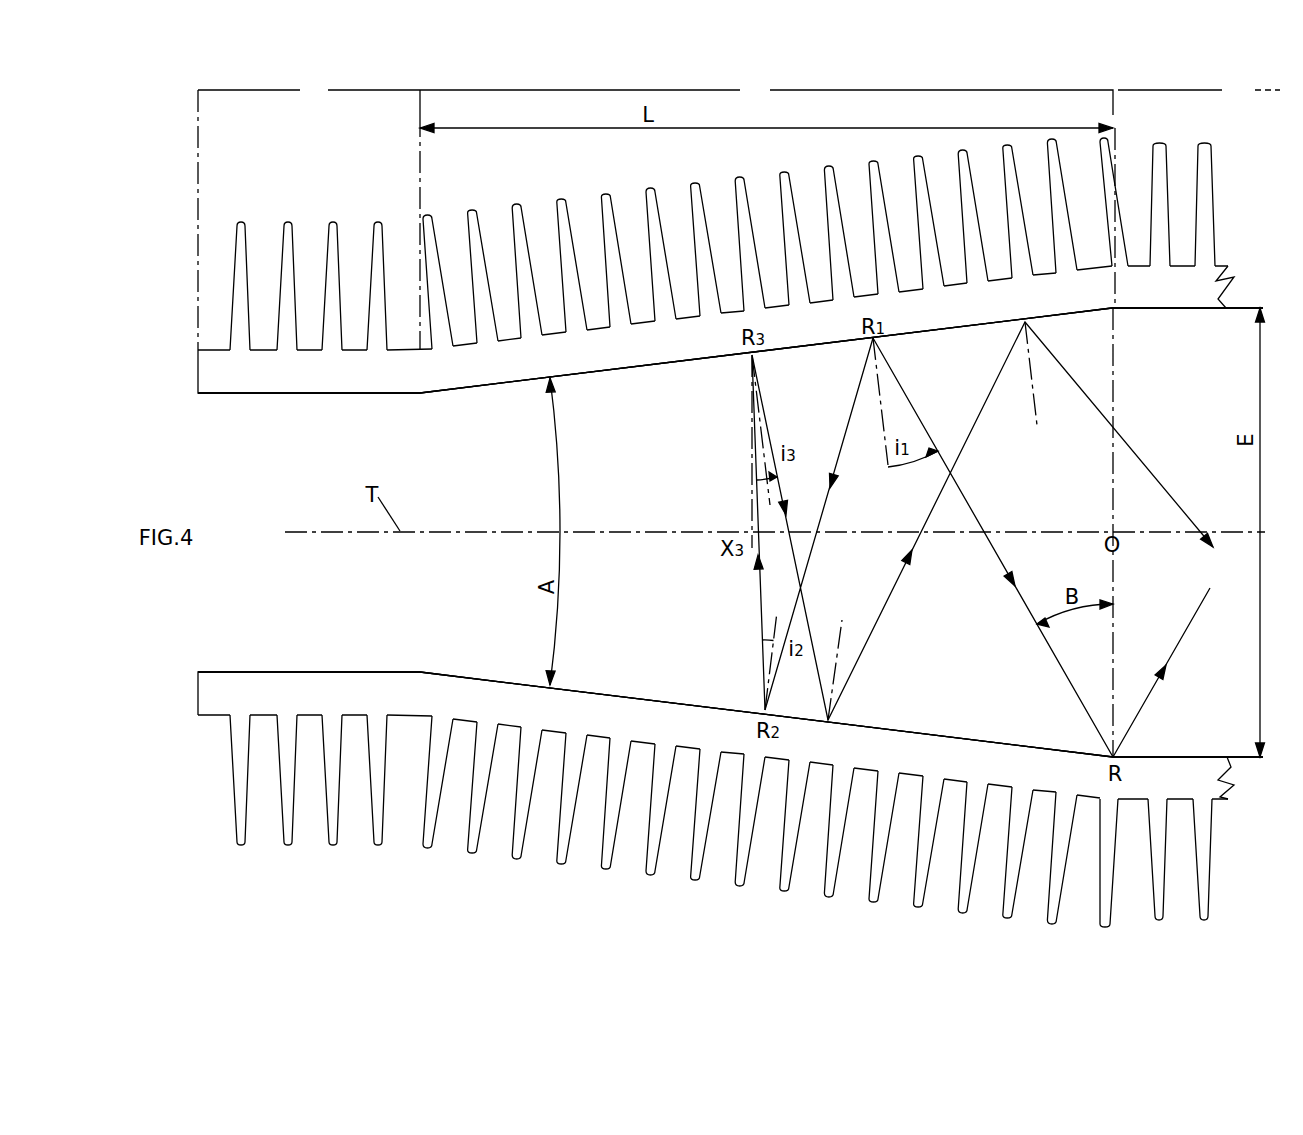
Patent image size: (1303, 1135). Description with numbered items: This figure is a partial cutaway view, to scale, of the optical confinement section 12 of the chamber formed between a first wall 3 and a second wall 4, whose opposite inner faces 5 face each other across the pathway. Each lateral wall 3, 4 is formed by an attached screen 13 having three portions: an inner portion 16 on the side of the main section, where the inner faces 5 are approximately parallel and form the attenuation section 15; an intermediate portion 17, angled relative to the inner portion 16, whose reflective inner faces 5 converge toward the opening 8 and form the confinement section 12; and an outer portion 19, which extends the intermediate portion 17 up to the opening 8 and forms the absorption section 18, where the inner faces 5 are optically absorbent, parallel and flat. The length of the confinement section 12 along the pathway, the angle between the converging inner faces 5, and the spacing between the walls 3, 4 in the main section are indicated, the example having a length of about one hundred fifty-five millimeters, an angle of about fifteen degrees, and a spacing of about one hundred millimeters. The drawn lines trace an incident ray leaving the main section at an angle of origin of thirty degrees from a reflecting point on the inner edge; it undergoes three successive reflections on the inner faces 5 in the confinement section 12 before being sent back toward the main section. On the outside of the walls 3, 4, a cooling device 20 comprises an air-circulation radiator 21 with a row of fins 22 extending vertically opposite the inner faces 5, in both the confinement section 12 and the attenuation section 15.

The first wall 3 is at (1218, 279).
The second wall 4 is at (1205, 781).
The inner faces 5 is at (303, 395).
The opening 8 is at (195, 604).
The optical confinement section 12 is at (767, 193).
The attached screen 13 is at (741, 516).
The attenuation section 15 is at (1199, 91).
The inner portion 16 is at (1197, 302).
The intermediate portion 17 is at (933, 322).
The absorption section 18 is at (309, 214).
The outer portion 19 is at (267, 385).
The cooling device 20 is at (700, 880).
The radiator 21 is at (745, 824).
The fins 22 is at (243, 233).